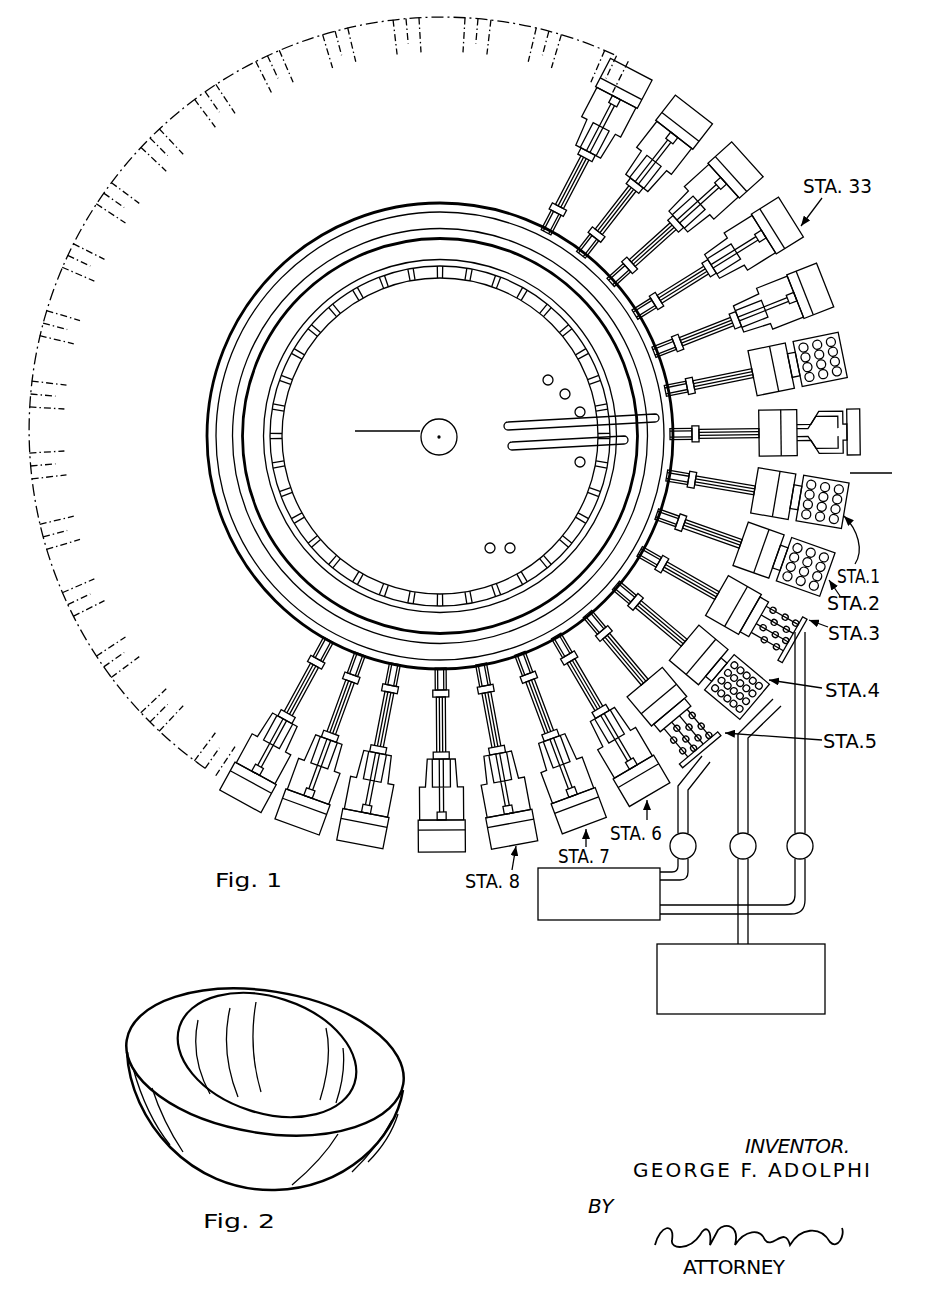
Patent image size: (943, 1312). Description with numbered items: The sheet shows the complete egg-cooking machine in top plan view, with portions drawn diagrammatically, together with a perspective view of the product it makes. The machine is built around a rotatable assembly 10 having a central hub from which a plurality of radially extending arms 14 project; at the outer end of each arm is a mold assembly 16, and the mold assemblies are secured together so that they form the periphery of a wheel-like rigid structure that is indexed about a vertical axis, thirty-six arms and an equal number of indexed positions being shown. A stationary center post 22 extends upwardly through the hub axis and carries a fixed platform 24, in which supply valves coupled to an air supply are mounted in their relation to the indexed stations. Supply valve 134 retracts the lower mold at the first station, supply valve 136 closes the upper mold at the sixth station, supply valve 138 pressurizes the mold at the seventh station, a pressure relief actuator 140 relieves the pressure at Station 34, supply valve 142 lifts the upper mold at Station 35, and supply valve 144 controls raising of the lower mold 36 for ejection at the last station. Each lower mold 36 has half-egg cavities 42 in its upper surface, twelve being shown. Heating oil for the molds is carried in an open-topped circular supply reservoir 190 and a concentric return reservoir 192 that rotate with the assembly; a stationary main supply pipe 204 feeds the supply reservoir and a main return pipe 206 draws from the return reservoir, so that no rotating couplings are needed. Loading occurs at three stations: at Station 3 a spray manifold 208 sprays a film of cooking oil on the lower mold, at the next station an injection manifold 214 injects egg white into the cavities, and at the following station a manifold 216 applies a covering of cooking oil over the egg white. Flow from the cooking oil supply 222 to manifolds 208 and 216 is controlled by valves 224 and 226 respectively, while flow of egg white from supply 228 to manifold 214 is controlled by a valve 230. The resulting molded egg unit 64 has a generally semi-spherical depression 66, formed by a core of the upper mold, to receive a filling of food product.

In FIG. 1, the Station 3 is at (375, 441).
In FIG. 1, the rotatable assembly 10 is at (705, 111).
In FIG. 1, the arms 14 is at (663, 508).
In FIG. 1, the mold assembly 16 is at (747, 157).
In FIG. 1, the center post 22 is at (437, 419).
In FIG. 1, the fixed platform 24 is at (420, 331).
In FIG. 1, the Station 34 is at (819, 273).
In FIG. 1, the Station 35 is at (838, 328).
In FIG. 1, the lower mold 36 is at (845, 410).
In FIG. 1, the cavities 42 is at (756, 345).
In FIG. 2, the molded egg unit 64 is at (401, 1068).
In FIG. 2, the semi-spherical depression 66 is at (276, 1019).
In FIG. 1, the supply valve 134 is at (576, 466).
In FIG. 1, the supply valve 136 is at (514, 545).
In FIG. 1, the supply valve 138 is at (486, 544).
In FIG. 1, the pressure relief actuator 140 is at (545, 375).
In FIG. 1, the supply valve 142 is at (559, 393).
In FIG. 1, the supply valve 144 is at (574, 412).
In FIG. 1, the supply reservoir 190 is at (453, 217).
In FIG. 1, the return reservoir 192 is at (403, 250).
In FIG. 1, the main supply pipe 204 is at (517, 430).
In FIG. 1, the main return pipe 206 is at (522, 452).
In FIG. 1, the spray manifold 208 is at (808, 648).
In FIG. 1, the injection manifold 214 is at (769, 697).
In FIG. 1, the manifold 216 is at (701, 771).
In FIG. 1, the cooking oil supply 222 is at (538, 917).
In FIG. 1, the valve 224 is at (813, 845).
In FIG. 1, the valve 226 is at (694, 851).
In FIG. 1, the egg white supply 228 is at (657, 991).
In FIG. 1, the valve 230 is at (746, 833).